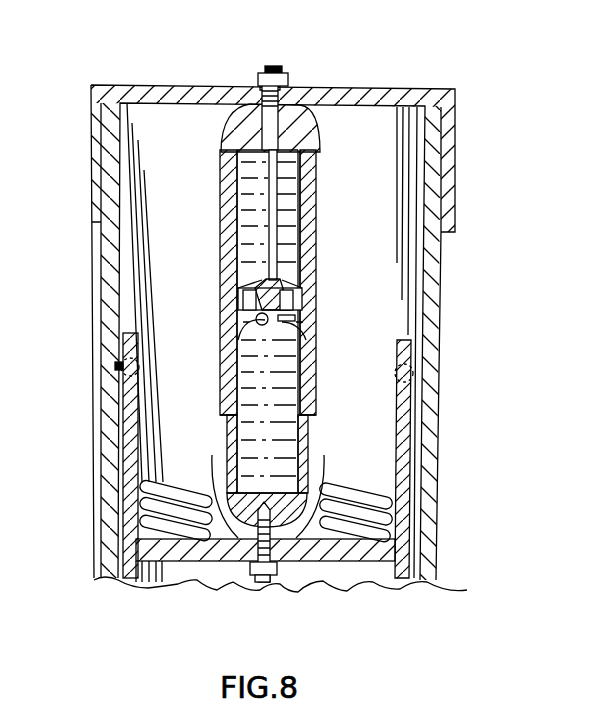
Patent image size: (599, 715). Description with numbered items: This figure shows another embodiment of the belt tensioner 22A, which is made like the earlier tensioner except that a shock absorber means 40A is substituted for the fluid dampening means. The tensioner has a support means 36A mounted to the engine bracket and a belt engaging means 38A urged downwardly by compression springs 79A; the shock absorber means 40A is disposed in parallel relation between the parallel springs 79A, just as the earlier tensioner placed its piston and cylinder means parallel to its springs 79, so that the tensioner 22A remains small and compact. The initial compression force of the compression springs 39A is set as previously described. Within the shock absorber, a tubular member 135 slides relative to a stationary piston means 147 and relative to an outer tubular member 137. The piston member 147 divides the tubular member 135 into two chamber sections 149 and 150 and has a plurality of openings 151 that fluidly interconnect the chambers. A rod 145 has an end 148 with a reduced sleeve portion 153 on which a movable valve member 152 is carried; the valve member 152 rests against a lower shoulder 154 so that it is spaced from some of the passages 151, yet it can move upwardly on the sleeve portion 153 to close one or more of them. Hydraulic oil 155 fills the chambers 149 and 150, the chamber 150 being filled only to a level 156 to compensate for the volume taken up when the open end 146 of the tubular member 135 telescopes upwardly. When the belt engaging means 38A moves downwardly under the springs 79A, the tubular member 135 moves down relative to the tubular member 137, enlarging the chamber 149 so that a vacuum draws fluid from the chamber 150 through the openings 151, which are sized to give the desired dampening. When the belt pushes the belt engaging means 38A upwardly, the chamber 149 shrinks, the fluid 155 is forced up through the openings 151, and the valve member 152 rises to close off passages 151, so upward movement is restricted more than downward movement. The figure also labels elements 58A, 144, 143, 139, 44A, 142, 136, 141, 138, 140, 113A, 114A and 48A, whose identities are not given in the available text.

The tensioner 22A is at (438, 55).
The top plate 58A is at (173, 84).
The bolt 144 is at (256, 78).
The nut 143 is at (289, 75).
The washer 139 is at (286, 98).
The support means 36A is at (467, 135).
The inner wall 44A is at (443, 280).
The cap 142 is at (258, 113).
The level 156 is at (258, 153).
The rod 145 is at (267, 196).
The open end 146 is at (308, 168).
The chamber section 150 is at (294, 220).
The tubular member 137 is at (222, 234).
The shock absorber means 40A is at (324, 247).
The end of the rod 148 is at (272, 278).
The openings 151 is at (243, 299).
The piston means 147 is at (302, 290).
The lower shoulder 154 is at (242, 332).
The reduced sleeve portion 153 is at (256, 342).
The movable valve member 152 is at (303, 328).
The hydraulic oil 155 is at (290, 375).
The sleeve end 136 is at (311, 420).
The tubular member 135 is at (306, 447).
The chamber section 149 is at (243, 445).
The cup 141 is at (300, 503).
The springs 79 is at (139, 491).
The compression springs 39A is at (384, 488).
The compression springs 79A is at (390, 500).
The bottom block 138 is at (213, 556).
The bolt 140 is at (240, 555).
The nut 113A is at (282, 558).
The washer 114A is at (273, 576).
The bottom plate 48A is at (350, 555).
The belt engaging means 38A is at (138, 593).